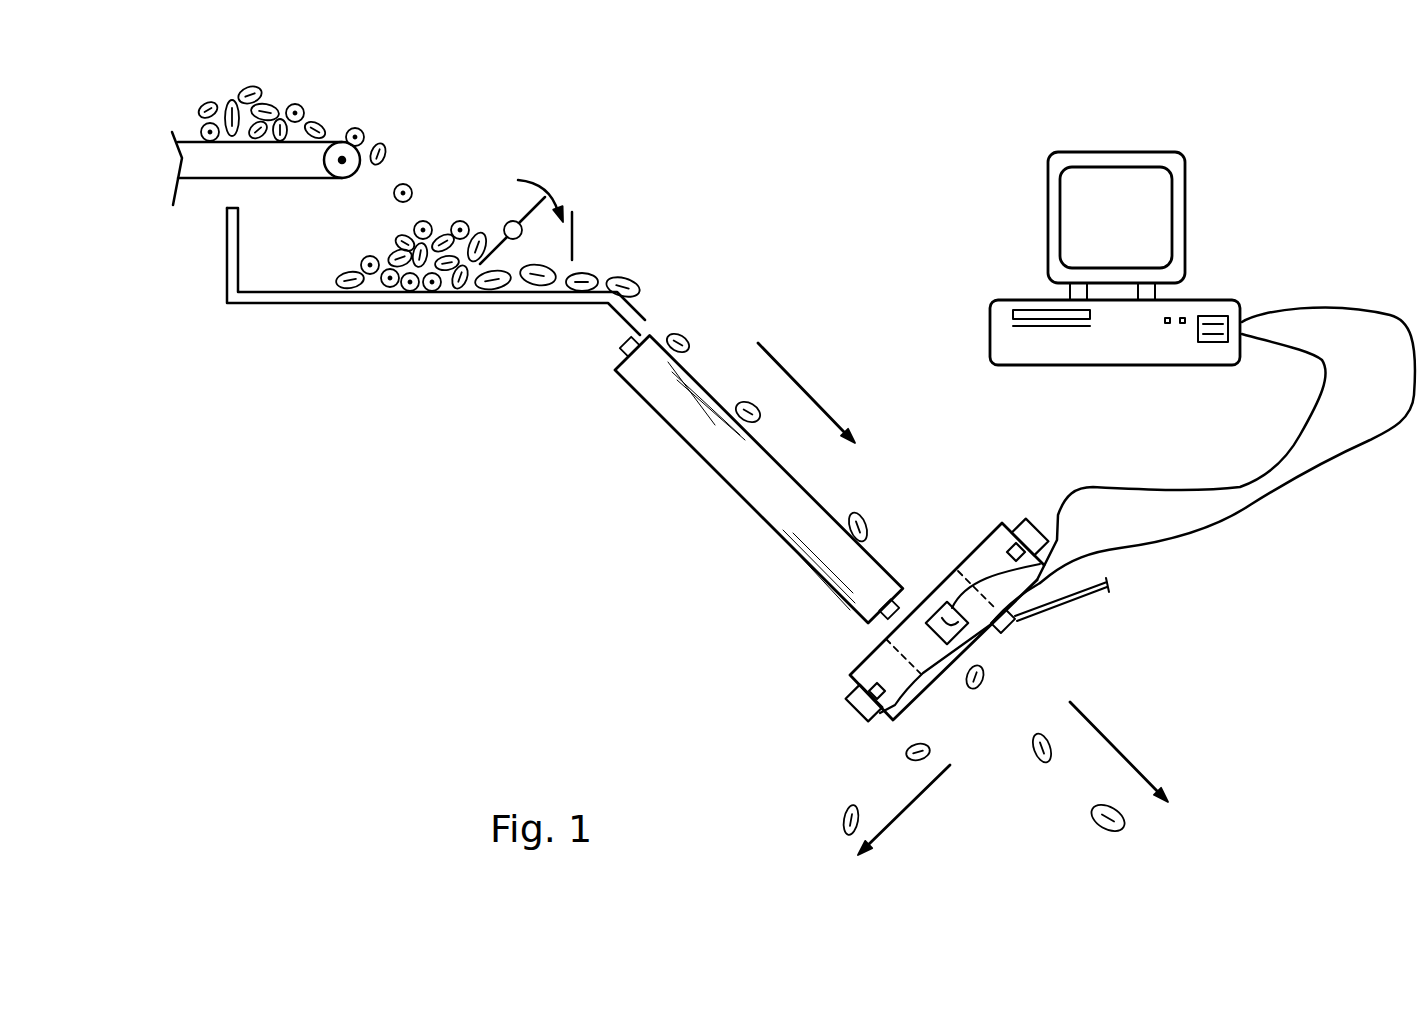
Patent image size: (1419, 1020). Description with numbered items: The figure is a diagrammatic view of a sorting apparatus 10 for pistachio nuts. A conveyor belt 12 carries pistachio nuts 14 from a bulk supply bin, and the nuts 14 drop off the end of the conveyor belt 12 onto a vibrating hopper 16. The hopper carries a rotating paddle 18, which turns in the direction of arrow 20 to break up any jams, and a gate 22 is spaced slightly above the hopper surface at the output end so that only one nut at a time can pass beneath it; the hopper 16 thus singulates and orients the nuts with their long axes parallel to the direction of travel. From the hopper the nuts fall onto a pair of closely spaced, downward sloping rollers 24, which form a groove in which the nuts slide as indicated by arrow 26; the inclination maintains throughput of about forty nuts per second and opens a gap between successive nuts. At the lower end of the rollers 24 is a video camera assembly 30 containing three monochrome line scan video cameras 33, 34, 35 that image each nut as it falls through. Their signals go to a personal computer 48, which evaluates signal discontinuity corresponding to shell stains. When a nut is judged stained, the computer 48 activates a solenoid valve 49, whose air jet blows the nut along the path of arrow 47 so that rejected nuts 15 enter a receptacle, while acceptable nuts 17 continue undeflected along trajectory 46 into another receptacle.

The sorting apparatus 10 is at (672, 525).
The conveyor belt 12 is at (213, 180).
The pistachio nuts 14 is at (245, 92).
The rejected nuts 15 is at (858, 818).
The vibrating hopper 16 is at (313, 292).
The acceptable nuts 17 is at (1095, 822).
The rotating paddle 18 is at (540, 200).
The arrow 20 is at (533, 180).
The gate 22 is at (575, 240).
The downward sloping rollers 24 is at (653, 390).
The arrow 26 is at (780, 362).
The video camera assembly 30 is at (850, 648).
The line scan video camera 33 is at (1018, 528).
The line scan video camera 34 is at (946, 616).
The line scan video camera 35 is at (863, 707).
The trajectory 46 is at (1087, 713).
The arrow 47 is at (905, 810).
The personal computer 48 is at (1198, 298).
The solenoid valve 49 is at (1017, 637).